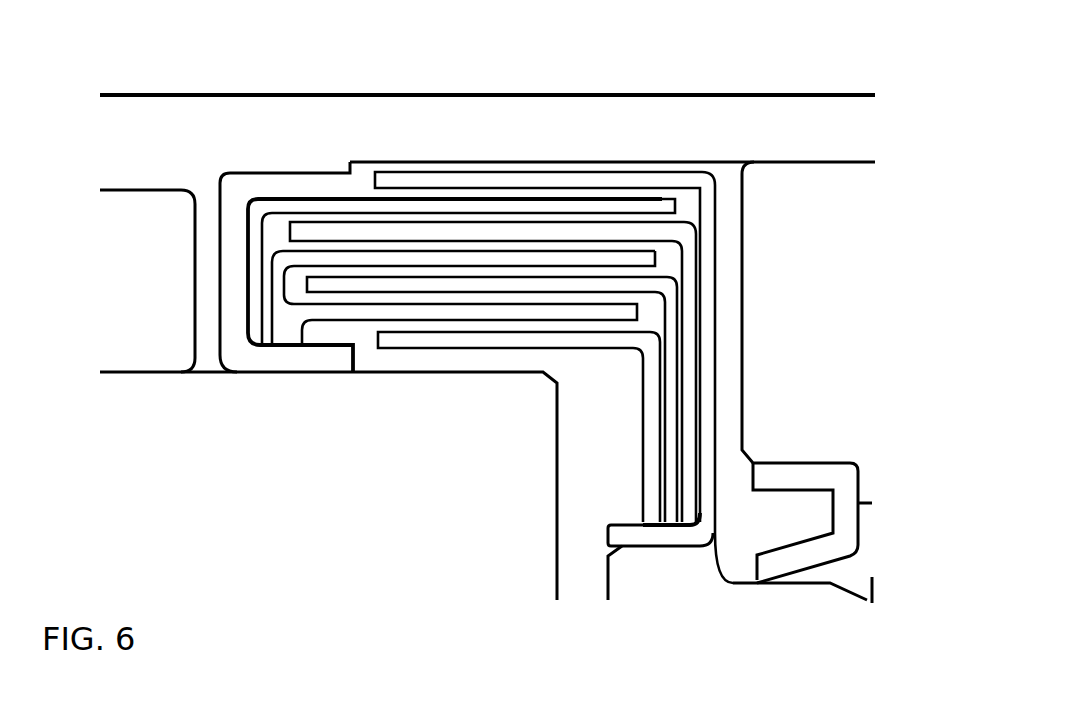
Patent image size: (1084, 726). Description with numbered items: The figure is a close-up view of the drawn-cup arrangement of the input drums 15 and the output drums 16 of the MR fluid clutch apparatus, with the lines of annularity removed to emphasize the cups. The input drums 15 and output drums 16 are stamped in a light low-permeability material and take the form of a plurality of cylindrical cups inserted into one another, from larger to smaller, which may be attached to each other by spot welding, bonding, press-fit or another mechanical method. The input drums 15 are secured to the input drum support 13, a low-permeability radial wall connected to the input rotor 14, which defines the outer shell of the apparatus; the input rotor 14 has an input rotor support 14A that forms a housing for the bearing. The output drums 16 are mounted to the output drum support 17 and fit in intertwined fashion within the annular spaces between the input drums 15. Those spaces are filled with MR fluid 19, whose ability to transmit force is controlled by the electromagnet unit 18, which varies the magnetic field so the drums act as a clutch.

The input drum support 13 is at (241, 202).
The input rotor 14 is at (222, 112).
The input rotor support 14A is at (788, 203).
The input annular drums 15 is at (325, 200).
The output annular drums 16 is at (495, 176).
The output drum support 17 is at (712, 282).
The electromagnet unit 18 is at (181, 212).
The MR fluid 19 is at (681, 201).